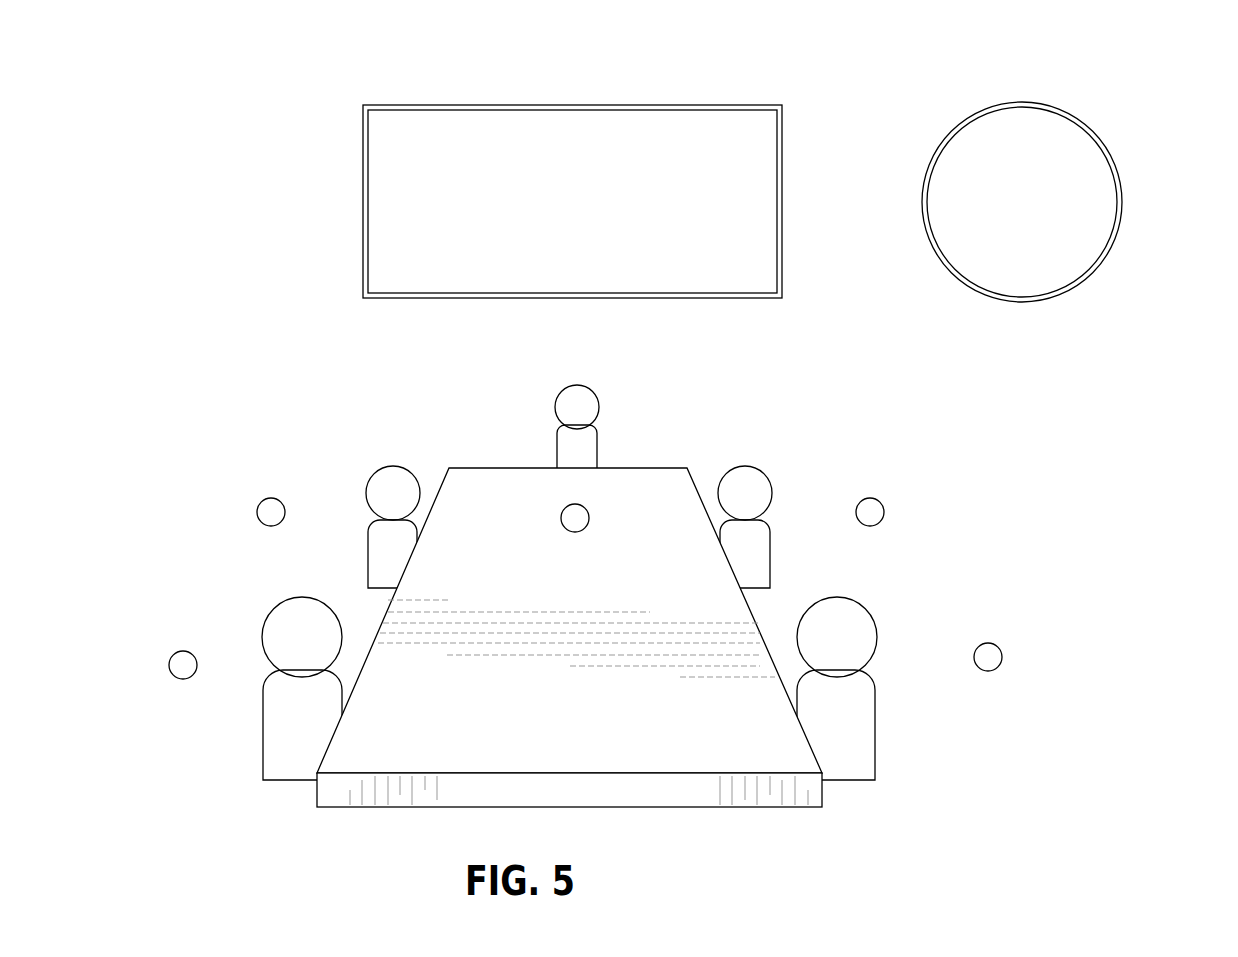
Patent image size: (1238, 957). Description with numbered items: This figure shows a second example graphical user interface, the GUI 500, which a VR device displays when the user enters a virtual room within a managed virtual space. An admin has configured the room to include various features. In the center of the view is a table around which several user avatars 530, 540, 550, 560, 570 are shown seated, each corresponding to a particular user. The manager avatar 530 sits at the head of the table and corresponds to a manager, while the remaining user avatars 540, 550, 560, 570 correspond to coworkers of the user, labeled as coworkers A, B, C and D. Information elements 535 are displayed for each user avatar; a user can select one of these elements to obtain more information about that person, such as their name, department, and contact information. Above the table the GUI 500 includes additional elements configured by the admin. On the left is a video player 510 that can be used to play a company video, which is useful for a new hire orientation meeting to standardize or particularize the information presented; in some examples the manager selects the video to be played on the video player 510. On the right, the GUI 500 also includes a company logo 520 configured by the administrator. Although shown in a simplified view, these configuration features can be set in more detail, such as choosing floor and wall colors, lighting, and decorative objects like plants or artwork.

The GUI 500 is at (612, 51).
The video player 510 is at (782, 188).
The company logo 520 is at (1118, 188).
The manager avatar 530 is at (597, 432).
The information elements 535 is at (586, 530).
The user avatar 540 is at (220, 468).
The user avatar 550 is at (122, 622).
The user avatar 560 is at (953, 468).
The user avatar 570 is at (1073, 612).